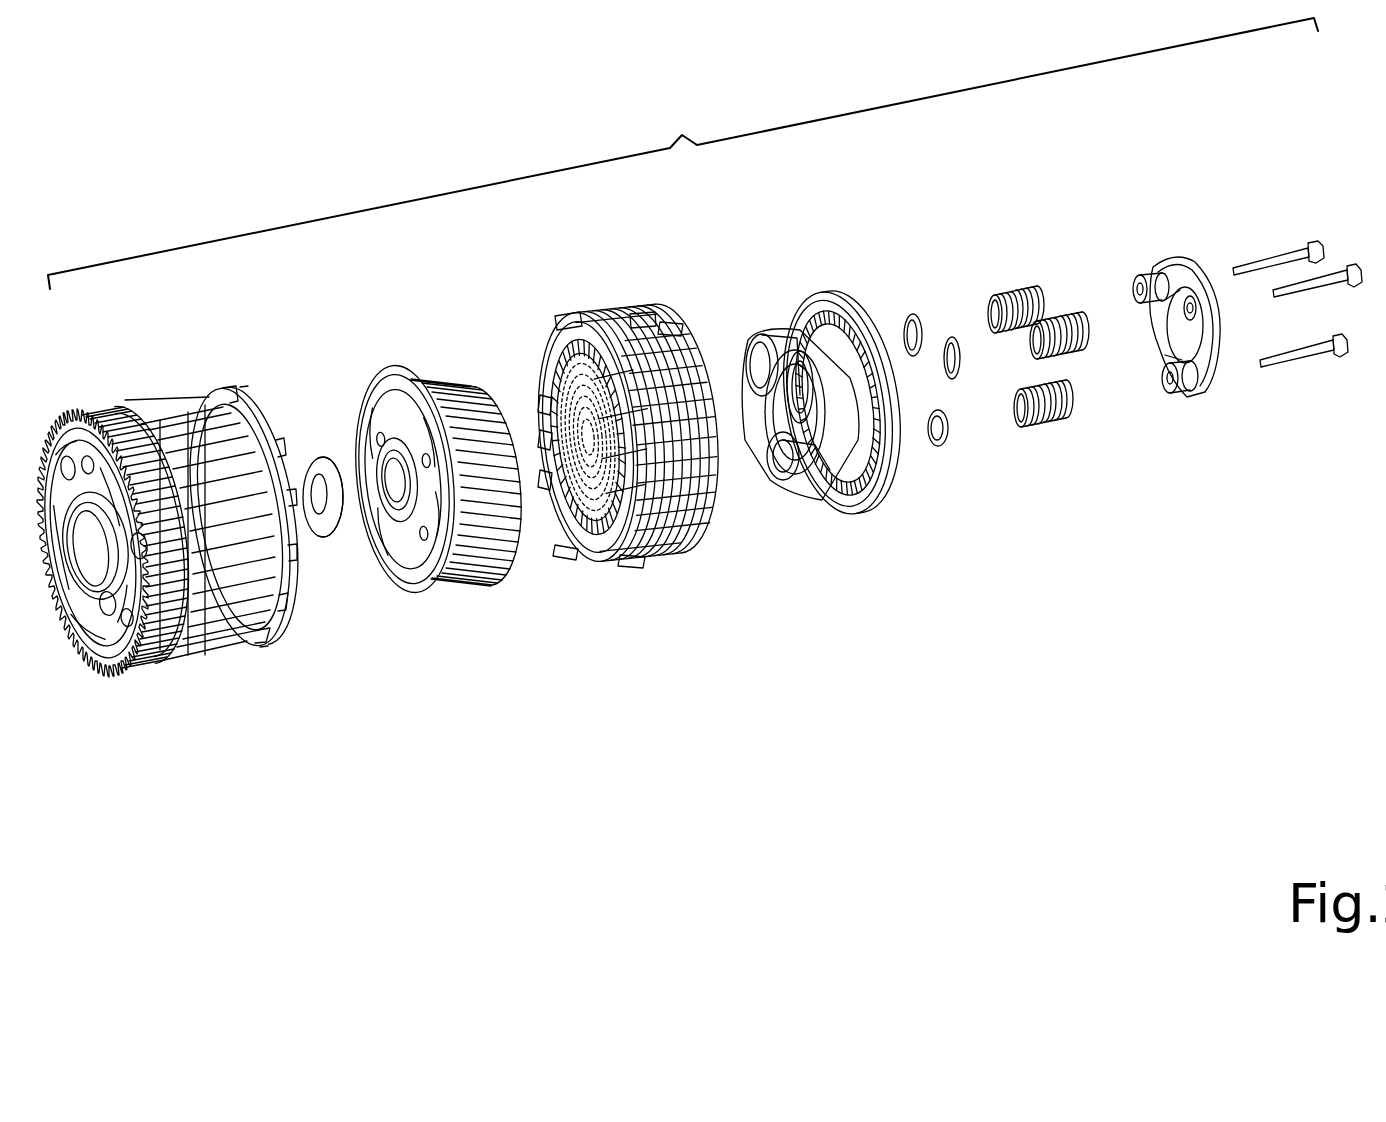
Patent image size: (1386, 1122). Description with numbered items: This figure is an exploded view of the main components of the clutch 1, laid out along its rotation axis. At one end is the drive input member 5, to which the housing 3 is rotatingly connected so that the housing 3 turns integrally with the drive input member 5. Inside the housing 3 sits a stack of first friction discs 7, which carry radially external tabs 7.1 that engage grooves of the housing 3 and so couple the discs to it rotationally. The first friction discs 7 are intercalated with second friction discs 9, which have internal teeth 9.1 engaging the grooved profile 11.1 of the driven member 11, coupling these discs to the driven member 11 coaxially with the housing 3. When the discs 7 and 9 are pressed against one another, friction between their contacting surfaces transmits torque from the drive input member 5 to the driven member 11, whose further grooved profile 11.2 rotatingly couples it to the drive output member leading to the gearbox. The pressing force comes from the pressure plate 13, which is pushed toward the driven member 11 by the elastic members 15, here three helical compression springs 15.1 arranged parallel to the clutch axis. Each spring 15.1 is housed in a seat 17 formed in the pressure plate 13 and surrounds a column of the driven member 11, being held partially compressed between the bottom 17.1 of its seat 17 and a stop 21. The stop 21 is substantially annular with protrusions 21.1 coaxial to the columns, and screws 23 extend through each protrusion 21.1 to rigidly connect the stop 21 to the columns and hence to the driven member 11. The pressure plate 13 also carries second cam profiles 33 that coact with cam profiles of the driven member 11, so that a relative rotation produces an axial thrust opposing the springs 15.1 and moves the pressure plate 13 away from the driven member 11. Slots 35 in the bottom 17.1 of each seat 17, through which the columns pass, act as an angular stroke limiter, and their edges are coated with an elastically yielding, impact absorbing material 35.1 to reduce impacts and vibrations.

The clutch 1 is at (683, 153).
The housing 3 is at (213, 650).
The drive input member 5 is at (170, 660).
The first friction discs 7 is at (548, 345).
The radially external tabs 7.1 is at (552, 318).
The second friction discs 9 is at (700, 520).
The internal teeth 9.1 is at (545, 420).
The driven member 11 is at (444, 355).
The grooved profile 11.1 is at (487, 565).
The grooved profile 11.2 is at (405, 483).
The pressure plate 13 is at (850, 296).
The elastic members 15 is at (1050, 325).
The helical compression springs 15.1 is at (1028, 278).
The seat 17 is at (778, 320).
The bottom 17.1 is at (752, 338).
The stop 21 is at (1200, 420).
The protrusions 21.1 is at (1185, 305).
The screws 23 is at (1310, 285).
The second cam profile 33 is at (800, 308).
The slots 35 is at (748, 378).
The impact absorbing material 35.1 is at (950, 336).